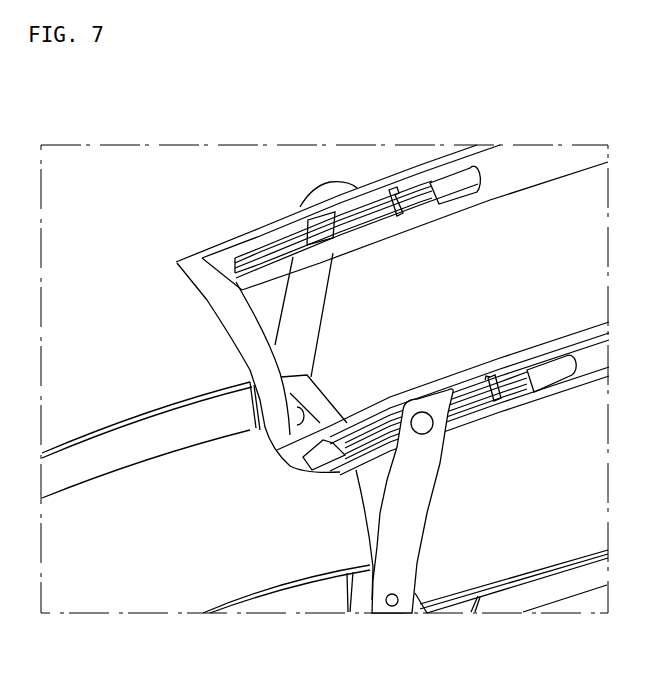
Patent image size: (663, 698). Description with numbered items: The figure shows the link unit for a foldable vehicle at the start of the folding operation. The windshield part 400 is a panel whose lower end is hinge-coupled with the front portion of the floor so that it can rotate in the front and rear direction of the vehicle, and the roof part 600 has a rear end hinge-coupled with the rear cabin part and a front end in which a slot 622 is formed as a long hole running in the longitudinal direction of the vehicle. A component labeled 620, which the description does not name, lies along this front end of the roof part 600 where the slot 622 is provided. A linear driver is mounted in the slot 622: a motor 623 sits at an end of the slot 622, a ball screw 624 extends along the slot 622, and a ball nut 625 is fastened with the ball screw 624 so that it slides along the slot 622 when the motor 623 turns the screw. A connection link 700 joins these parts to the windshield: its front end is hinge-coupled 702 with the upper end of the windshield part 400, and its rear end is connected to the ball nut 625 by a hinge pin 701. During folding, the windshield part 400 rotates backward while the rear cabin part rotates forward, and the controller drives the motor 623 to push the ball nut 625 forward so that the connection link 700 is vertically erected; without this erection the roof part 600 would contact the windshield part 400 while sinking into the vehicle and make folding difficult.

The windshield part 400 is at (147, 443).
The roof part 600 is at (529, 160).
The guide rail 620 is at (253, 240).
The slot 622 is at (370, 200).
The motor 623 is at (457, 185).
The ball screw 624 is at (390, 215).
The ball nut 625 is at (322, 228).
The connection link 700 is at (290, 318).
The hinge pin 701 is at (423, 425).
The hinge coupling 702 is at (393, 607).